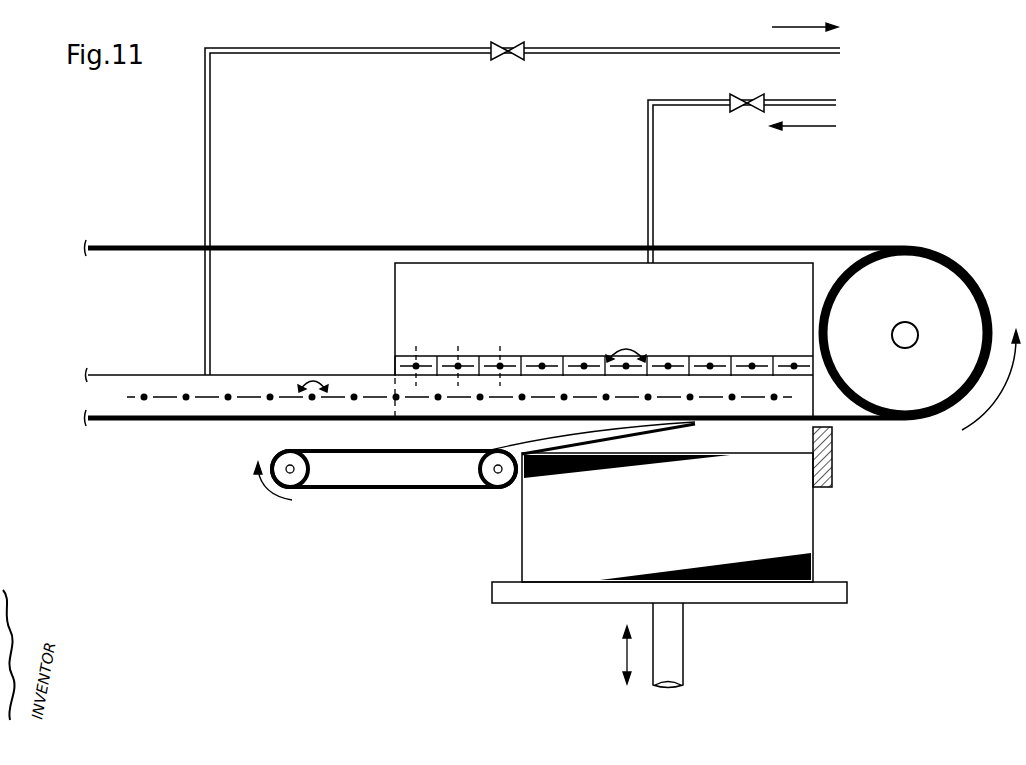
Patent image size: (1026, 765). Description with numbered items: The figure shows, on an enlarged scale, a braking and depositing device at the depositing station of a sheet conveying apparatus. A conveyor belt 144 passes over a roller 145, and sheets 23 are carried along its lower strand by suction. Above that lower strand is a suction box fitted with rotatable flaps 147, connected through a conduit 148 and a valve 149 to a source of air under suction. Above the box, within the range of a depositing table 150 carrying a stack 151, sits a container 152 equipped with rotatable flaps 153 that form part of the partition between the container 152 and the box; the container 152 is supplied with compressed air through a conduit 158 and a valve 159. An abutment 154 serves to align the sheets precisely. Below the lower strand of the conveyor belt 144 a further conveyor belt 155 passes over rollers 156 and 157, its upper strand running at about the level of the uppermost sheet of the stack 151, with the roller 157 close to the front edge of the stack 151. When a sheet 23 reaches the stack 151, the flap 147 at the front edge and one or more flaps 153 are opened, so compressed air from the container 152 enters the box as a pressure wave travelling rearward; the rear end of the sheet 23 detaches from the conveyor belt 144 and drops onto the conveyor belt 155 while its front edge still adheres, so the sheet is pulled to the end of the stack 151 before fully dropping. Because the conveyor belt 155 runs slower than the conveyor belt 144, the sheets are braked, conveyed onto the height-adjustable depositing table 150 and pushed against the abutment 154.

The sheet 23 is at (576, 438).
The conveyor belt 144 is at (463, 246).
The roller 145 is at (932, 266).
The rotatable flaps 147 is at (354, 392).
The conduit 148 is at (405, 53).
The valve 149 is at (516, 55).
The depositing table 150 is at (492, 593).
The stack 151 is at (818, 538).
The container 152 is at (742, 272).
The rotatable flaps 153 is at (584, 362).
The abutment 154 is at (833, 466).
The further conveyor belt 155 is at (398, 489).
The roller 156 is at (296, 482).
The roller 157 is at (492, 483).
The conduit 158 is at (655, 182).
The valve 159 is at (736, 108).